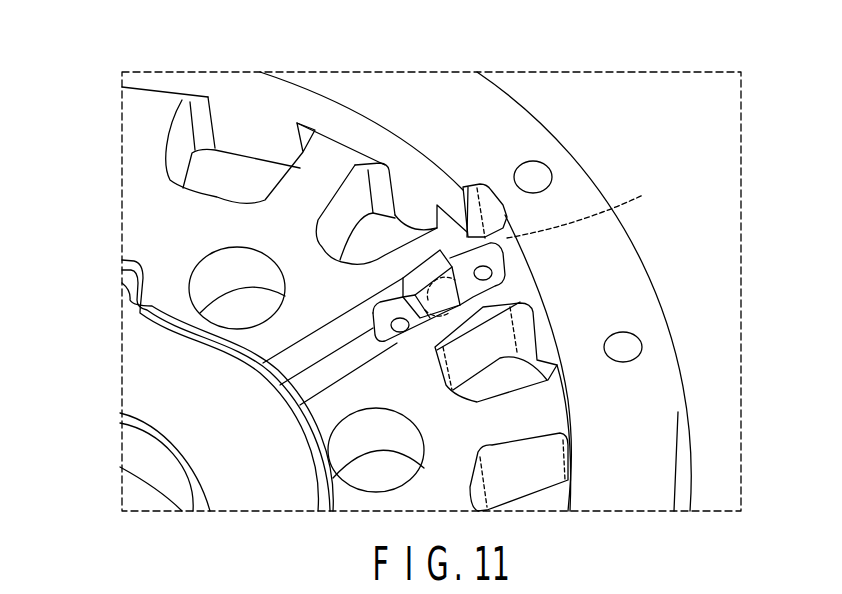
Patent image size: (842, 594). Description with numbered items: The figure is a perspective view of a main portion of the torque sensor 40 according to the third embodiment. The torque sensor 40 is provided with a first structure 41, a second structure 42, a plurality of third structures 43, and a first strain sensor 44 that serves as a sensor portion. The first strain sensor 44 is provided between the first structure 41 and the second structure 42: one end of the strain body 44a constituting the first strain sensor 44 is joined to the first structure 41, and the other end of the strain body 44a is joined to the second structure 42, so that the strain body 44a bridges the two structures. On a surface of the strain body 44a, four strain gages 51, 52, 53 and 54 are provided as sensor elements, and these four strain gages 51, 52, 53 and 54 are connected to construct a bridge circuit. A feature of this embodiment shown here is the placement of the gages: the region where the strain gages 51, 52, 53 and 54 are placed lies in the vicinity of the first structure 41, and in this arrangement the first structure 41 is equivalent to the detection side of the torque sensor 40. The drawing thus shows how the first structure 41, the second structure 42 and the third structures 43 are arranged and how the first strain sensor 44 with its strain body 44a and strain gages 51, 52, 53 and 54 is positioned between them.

The torque sensor 40 is at (545, 93).
The first structure 41 is at (438, 96).
The second structure 42 is at (143, 227).
The third structures 43 is at (312, 173).
The first strain sensor 44 is at (417, 345).
The strain body 44a is at (452, 295).
The strain gage 51 is at (643, 193).
The strain gage 52 is at (700, 237).
The strain gage 53 is at (643, 193).
The strain gage 54 is at (690, 235).